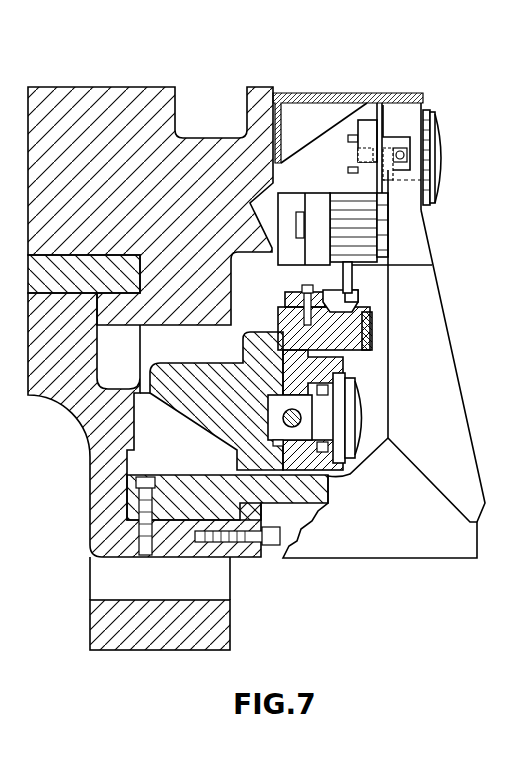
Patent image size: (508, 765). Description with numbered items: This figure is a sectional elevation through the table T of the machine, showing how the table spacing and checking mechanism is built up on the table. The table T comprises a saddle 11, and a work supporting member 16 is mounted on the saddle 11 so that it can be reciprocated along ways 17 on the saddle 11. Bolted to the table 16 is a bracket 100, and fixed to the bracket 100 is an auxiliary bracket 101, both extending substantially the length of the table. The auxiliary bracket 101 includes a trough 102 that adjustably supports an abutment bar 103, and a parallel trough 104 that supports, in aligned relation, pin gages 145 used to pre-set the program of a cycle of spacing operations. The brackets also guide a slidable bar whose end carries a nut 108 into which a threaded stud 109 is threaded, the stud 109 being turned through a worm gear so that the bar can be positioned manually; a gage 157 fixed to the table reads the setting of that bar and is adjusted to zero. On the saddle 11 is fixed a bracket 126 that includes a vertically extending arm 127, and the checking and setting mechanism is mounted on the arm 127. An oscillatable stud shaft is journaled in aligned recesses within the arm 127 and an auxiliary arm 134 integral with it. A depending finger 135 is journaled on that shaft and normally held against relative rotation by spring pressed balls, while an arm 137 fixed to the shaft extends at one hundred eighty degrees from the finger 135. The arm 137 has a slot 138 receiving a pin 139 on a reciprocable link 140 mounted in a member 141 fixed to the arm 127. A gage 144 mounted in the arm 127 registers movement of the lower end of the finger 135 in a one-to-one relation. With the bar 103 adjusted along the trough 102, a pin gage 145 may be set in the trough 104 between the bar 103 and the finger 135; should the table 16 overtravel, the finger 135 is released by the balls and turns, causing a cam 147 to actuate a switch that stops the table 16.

The table T is at (58, 76).
The saddle 11 is at (92, 540).
The work supporting member 16 is at (137, 97).
The ways 17 is at (138, 305).
The bracket 100 is at (200, 367).
The auxiliary bracket 101 is at (350, 350).
The trough 102 is at (302, 313).
The abutment bar 103 is at (287, 292).
The trough 104 is at (367, 315).
The nut 108 is at (278, 430).
The threaded stud 109 is at (278, 412).
The bracket 126 is at (388, 547).
The vertically extending arm 127 is at (442, 442).
The auxiliary arm 134 is at (315, 207).
The depending finger 135 is at (348, 280).
The arm 137 is at (385, 207).
The slot 138 is at (437, 172).
The pin 139 is at (378, 147).
The reciprocable link 140 is at (367, 145).
The member 141 is at (365, 178).
The gage 144 is at (432, 197).
The pin gages 145 is at (357, 300).
The cam 147 is at (336, 192).
The gage 157 is at (350, 457).